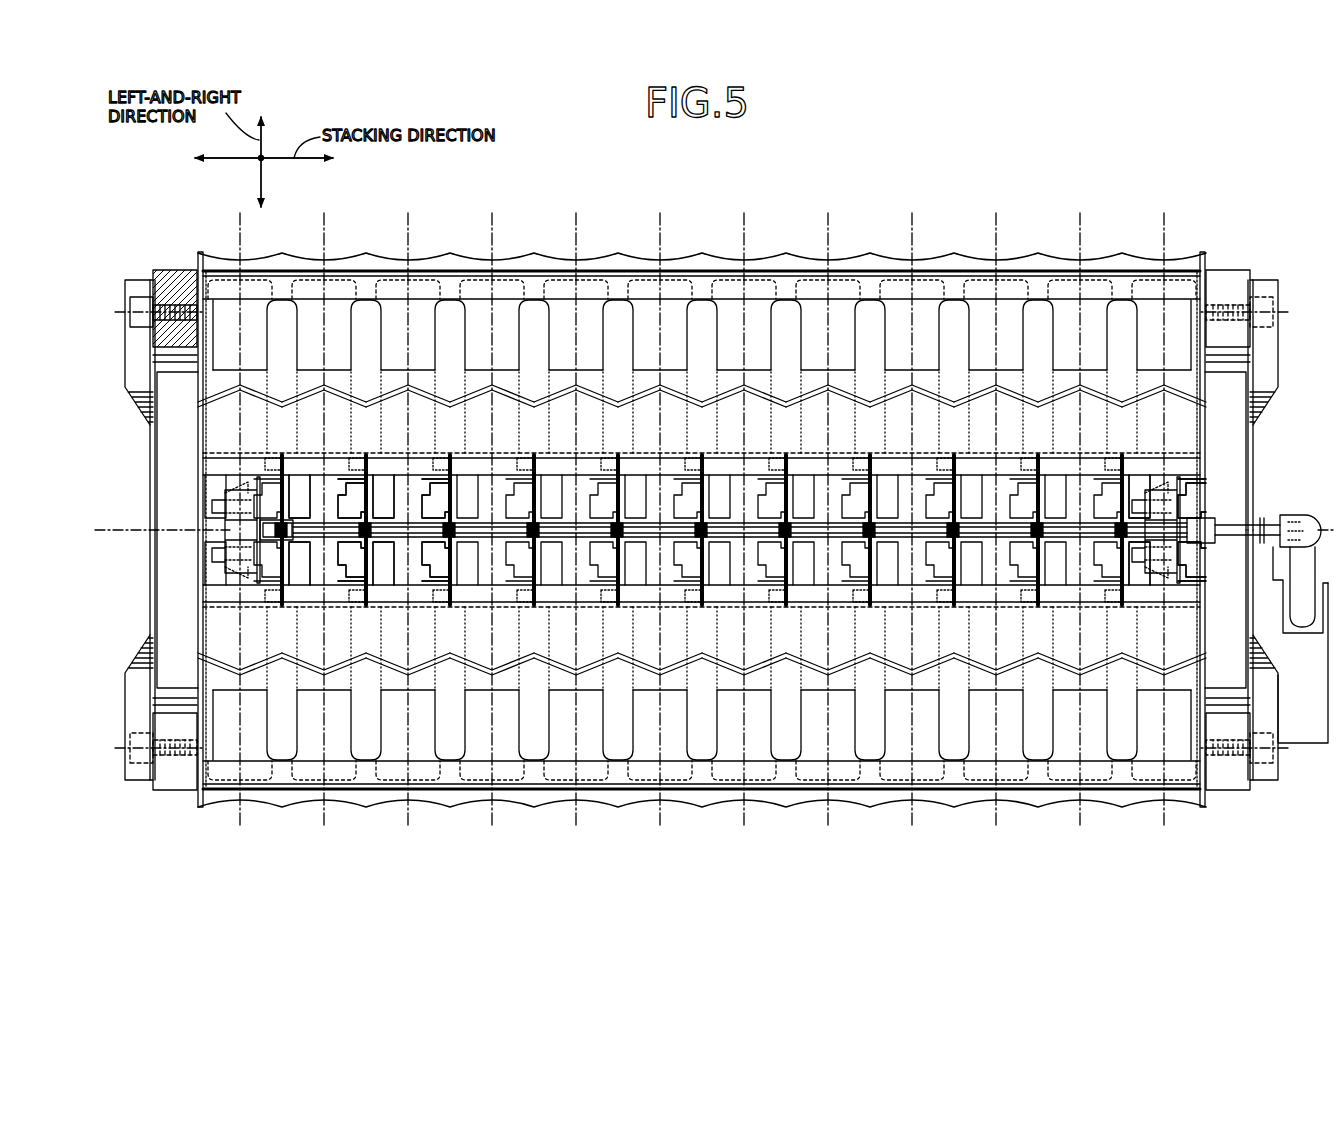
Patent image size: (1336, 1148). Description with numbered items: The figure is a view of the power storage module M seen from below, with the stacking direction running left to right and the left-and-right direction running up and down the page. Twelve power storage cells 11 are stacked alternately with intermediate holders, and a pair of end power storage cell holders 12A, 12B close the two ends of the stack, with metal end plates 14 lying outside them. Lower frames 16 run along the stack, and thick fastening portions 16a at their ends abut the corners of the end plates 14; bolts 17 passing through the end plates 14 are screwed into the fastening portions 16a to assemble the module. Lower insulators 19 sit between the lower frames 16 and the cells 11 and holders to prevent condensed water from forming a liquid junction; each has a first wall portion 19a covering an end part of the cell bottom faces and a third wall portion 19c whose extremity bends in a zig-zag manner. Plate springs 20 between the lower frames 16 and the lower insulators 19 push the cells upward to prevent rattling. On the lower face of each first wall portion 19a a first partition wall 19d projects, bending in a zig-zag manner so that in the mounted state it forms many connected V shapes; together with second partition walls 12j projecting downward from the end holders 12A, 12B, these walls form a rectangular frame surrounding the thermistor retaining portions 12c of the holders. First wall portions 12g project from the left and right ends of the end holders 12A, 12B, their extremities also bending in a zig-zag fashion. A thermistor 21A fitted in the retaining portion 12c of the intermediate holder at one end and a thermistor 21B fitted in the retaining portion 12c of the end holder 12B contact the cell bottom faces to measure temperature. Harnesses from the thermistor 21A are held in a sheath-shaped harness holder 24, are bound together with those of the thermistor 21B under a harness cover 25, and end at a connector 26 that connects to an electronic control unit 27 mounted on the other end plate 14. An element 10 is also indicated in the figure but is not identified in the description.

The power storage module M is at (787, 220).
The first battery module unit 10 is at (272, 598).
The power storage cell 11 is at (1110, 598).
The end power storage cell holder 12A is at (150, 520).
The end power storage cell holder 12B is at (1254, 433).
The thermistor retaining portion 12c is at (318, 455).
The first wall portion 12g is at (200, 253).
The second partition wall 12j is at (197, 500).
The end plate 14 is at (140, 358).
The lower frame 16 is at (600, 268).
The fastening portion 16a is at (176, 272).
The bolt 17 is at (130, 300).
The lower insulator 19 is at (1053, 250).
The first wall portion 19a is at (718, 432).
The third wall portion 19c is at (981, 258).
The first partition wall 19d is at (474, 400).
The plate spring 20 is at (926, 316).
The thermistor 21A is at (230, 537).
The thermistor 21B is at (1160, 527).
The harness holder 24 is at (652, 521).
The harness cover 25 is at (1303, 514).
The connector 26 is at (1316, 634).
The electronic control unit 27 is at (1298, 722).